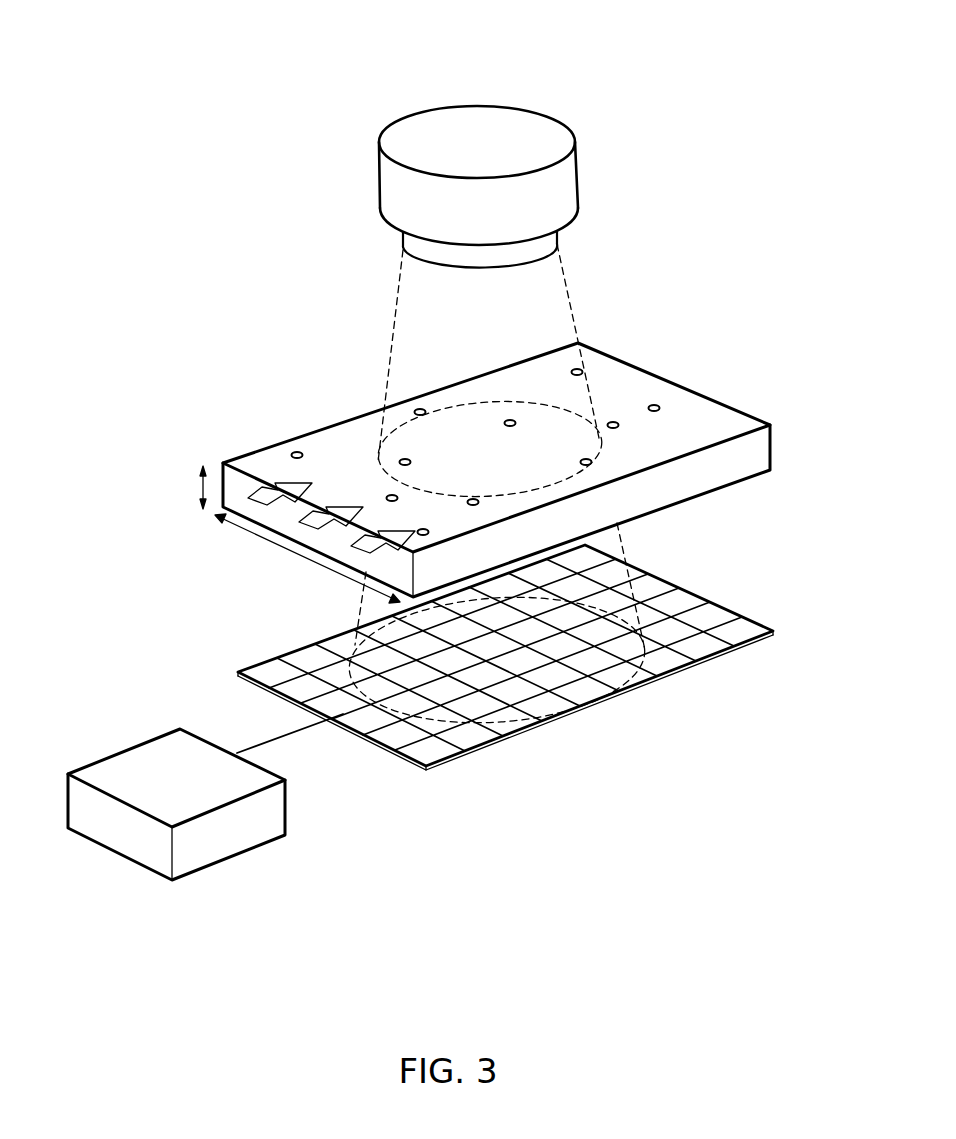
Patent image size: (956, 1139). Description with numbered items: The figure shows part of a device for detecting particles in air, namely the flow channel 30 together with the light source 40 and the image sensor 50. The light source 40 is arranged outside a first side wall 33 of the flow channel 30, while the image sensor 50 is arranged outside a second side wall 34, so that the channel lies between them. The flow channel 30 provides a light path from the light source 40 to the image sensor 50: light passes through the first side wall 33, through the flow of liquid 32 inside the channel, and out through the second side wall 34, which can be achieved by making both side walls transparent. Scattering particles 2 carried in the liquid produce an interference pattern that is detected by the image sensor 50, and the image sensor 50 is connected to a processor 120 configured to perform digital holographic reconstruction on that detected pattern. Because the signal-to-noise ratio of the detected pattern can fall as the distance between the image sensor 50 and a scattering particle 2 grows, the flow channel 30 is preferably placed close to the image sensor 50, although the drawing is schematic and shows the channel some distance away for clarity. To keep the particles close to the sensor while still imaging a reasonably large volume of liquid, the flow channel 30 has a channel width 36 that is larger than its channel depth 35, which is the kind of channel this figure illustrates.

The particle 2 is at (403, 458).
The flow channel 30 is at (343, 435).
The flow of liquid 32 is at (392, 532).
The first side wall 33 is at (630, 410).
The second side wall 34 is at (633, 450).
The channel depth 35 is at (200, 472).
The channel width 36 is at (297, 557).
The light source 40 is at (525, 130).
The image sensor 50 is at (707, 702).
The processor 120 is at (232, 837).